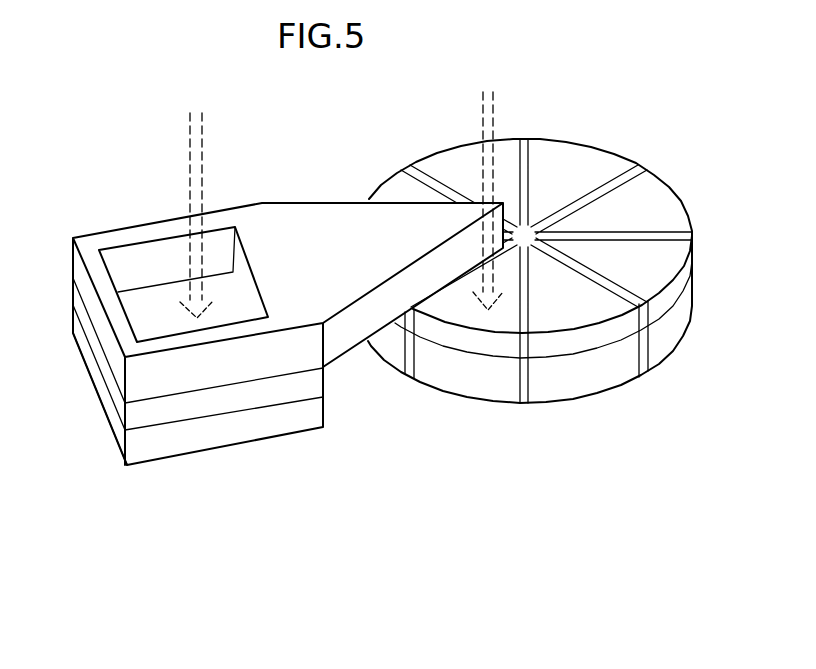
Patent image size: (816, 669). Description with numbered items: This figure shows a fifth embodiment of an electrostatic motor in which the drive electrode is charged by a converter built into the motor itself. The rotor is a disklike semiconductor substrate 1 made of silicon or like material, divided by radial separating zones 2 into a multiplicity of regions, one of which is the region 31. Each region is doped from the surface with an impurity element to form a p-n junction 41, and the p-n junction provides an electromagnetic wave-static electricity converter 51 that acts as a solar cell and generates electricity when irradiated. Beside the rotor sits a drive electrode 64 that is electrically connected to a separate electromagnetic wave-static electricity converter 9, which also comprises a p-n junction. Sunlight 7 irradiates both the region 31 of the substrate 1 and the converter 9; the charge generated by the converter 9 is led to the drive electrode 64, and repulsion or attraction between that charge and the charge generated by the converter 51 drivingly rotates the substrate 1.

The semiconductor substrate 1 is at (684, 197).
The radial separating zones 2 is at (633, 161).
The sunlight 7 is at (203, 165).
The electromagnetic wave-static electricity converter 9 is at (147, 303).
The drive electrode 64 is at (320, 221).
The region 31 is at (490, 320).
The p-n junction 41 is at (445, 343).
The electromagnetic wave-static electricity converter 51 is at (384, 410).